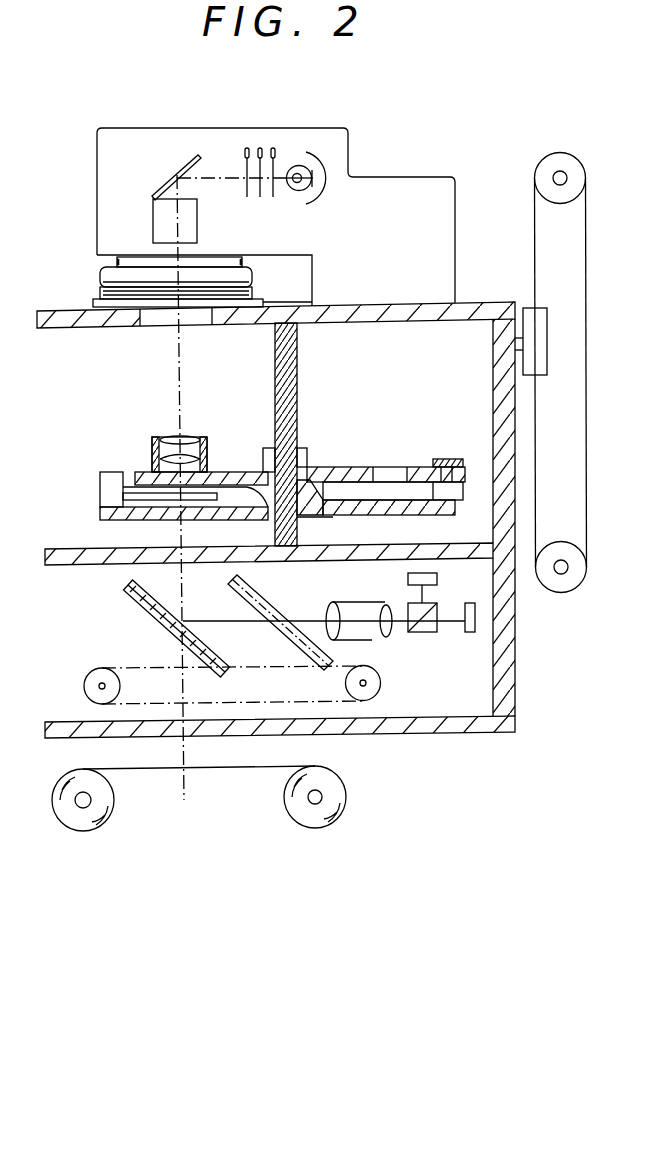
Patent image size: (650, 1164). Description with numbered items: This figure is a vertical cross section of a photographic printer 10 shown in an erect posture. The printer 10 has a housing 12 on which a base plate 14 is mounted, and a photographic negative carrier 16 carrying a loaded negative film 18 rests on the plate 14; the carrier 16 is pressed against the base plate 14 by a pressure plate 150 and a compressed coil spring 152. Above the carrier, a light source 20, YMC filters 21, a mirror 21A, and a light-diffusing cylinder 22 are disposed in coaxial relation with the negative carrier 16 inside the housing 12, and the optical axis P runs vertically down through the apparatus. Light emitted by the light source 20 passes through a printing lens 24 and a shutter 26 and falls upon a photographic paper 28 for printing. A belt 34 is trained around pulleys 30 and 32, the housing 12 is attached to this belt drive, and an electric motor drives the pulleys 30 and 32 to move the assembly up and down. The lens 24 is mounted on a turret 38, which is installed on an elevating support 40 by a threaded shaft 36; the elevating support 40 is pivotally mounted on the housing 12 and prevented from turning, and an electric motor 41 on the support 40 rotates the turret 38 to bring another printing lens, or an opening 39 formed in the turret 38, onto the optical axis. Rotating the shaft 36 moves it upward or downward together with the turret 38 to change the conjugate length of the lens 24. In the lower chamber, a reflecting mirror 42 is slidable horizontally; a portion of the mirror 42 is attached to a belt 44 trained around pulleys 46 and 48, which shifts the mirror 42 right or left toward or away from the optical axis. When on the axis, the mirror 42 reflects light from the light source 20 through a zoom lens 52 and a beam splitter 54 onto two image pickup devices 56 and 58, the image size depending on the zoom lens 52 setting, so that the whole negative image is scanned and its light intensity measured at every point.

The photographic printer 10 is at (442, 147).
The housing 12 is at (516, 675).
The base plate 14 is at (93, 303).
The photographic negative carrier 16 is at (100, 288).
The negative film 18 is at (157, 324).
The light source 20 is at (302, 150).
The YMC filters 21 is at (260, 140).
The mirror 21A is at (196, 157).
The light-diffusing cylinder 22 is at (197, 232).
The printing lens 24 is at (187, 436).
The shutter 26 is at (163, 508).
The photographic paper 28 is at (148, 768).
The pulley 30 is at (545, 162).
The pulley 32 is at (565, 590).
The belt 34 is at (533, 263).
The threaded shaft 36 is at (297, 383).
The turret 38 is at (342, 467).
The opening 39 is at (393, 473).
The elevating support 40 is at (327, 517).
The electric motor 41 is at (467, 495).
The reflecting mirror 42 is at (218, 652).
The belt 44 is at (127, 667).
The pulley 46 is at (84, 692).
The pulley 48 is at (380, 683).
The zoom lens 52 is at (333, 602).
The beam splitter 54 is at (422, 633).
The image pickup device 56 is at (437, 578).
The image pickup device 58 is at (470, 633).
The pressure plate 150 is at (252, 275).
The compressed coil spring 152 is at (117, 262).
The optical path P is at (183, 393).